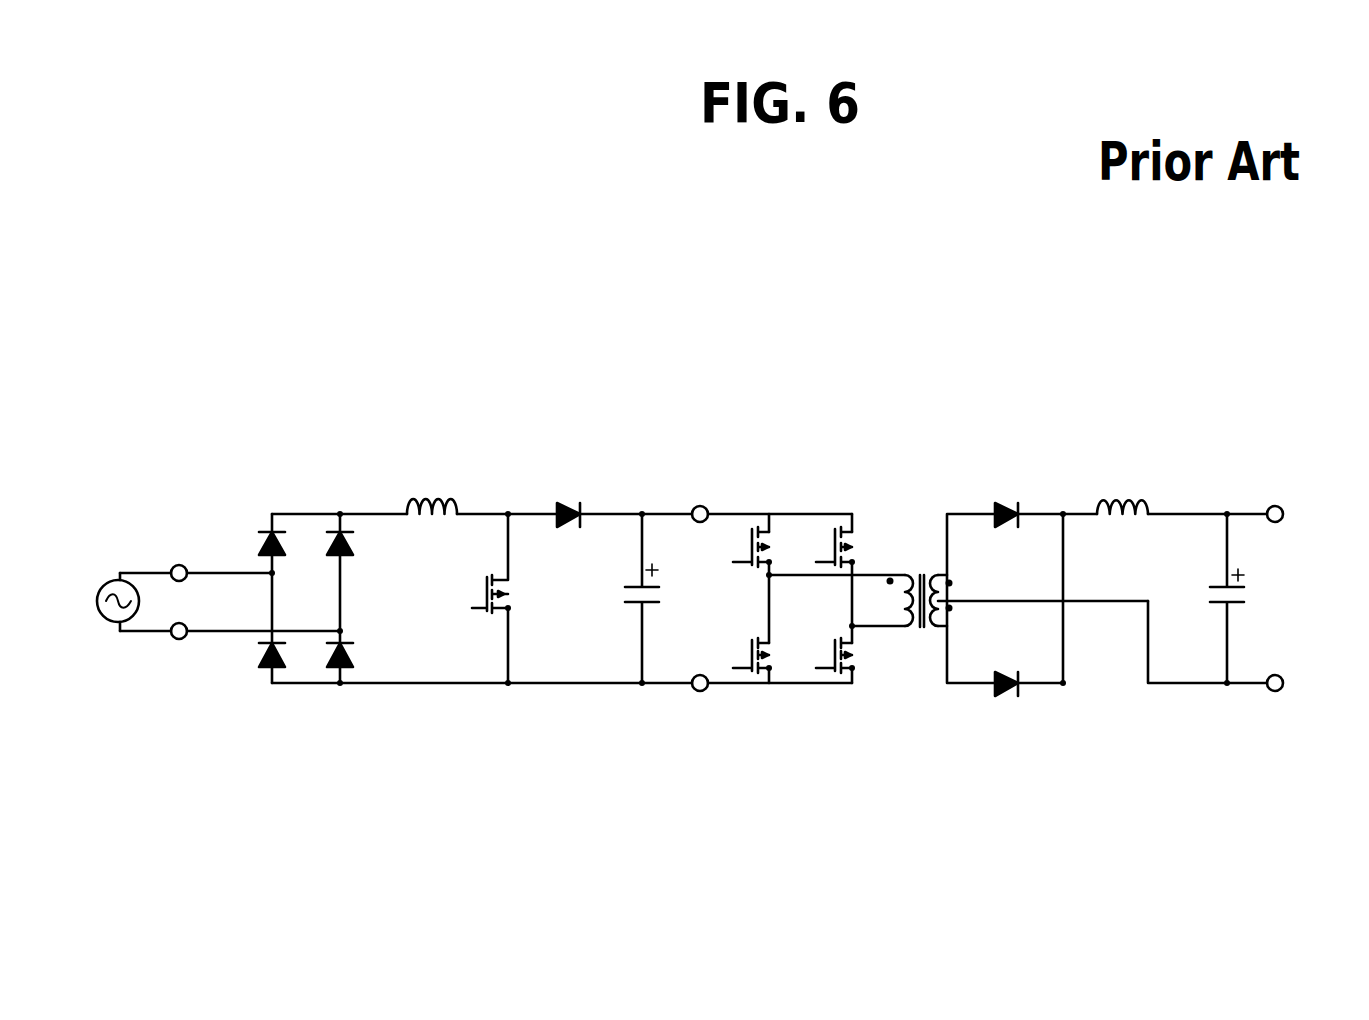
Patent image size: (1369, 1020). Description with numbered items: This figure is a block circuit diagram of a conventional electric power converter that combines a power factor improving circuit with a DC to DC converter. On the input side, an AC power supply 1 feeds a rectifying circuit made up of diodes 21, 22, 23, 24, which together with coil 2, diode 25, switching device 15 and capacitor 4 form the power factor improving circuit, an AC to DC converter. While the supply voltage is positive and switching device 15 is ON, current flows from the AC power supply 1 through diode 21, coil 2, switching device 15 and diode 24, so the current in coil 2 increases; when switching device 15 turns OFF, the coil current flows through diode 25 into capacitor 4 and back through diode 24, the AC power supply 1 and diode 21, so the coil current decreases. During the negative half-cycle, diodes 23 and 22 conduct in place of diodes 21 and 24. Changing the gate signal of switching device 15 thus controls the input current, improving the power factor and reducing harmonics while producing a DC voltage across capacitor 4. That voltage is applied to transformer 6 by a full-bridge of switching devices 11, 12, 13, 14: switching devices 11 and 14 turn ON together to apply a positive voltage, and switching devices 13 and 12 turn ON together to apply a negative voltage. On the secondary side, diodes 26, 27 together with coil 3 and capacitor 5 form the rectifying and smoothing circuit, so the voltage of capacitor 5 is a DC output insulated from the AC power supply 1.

The AC power supply 1 is at (88, 593).
The coil 2 is at (430, 490).
The coil 3 is at (1123, 490).
The capacitor 4 is at (668, 590).
The capacitor 5 is at (1253, 593).
The transformer 6 is at (900, 553).
The switching device 11 is at (742, 543).
The switching device 12 is at (785, 652).
The switching device 13 is at (827, 543).
The switching device 14 is at (857, 652).
The switching device 15 is at (520, 592).
The diode 21 is at (253, 540).
The diode 22 is at (253, 650).
The diode 23 is at (327, 540).
The diode 24 is at (327, 650).
The diode 25 is at (570, 498).
The diode 26 is at (1008, 498).
The diode 27 is at (1007, 708).